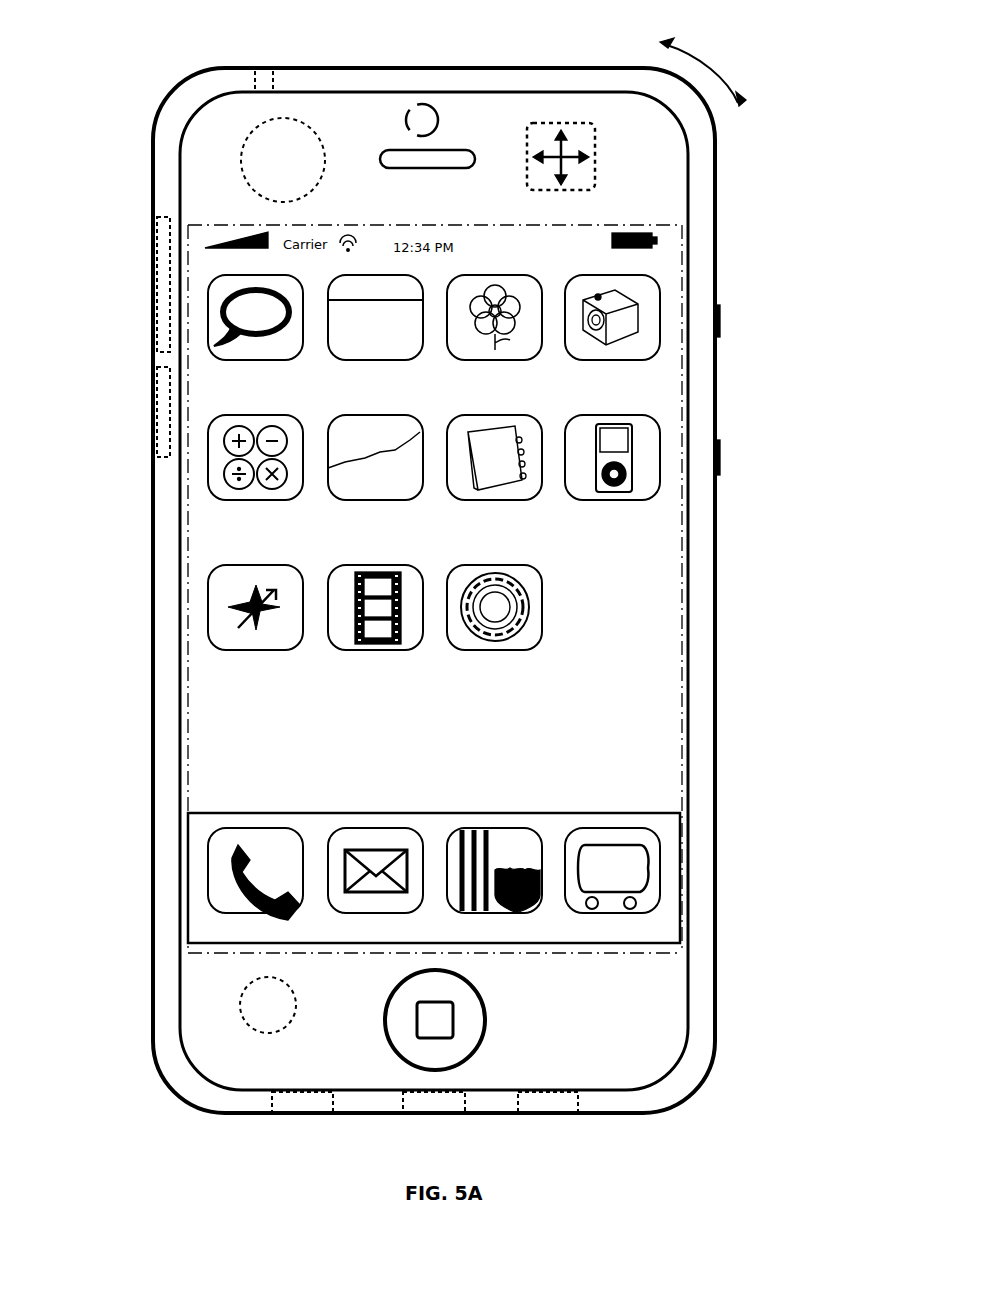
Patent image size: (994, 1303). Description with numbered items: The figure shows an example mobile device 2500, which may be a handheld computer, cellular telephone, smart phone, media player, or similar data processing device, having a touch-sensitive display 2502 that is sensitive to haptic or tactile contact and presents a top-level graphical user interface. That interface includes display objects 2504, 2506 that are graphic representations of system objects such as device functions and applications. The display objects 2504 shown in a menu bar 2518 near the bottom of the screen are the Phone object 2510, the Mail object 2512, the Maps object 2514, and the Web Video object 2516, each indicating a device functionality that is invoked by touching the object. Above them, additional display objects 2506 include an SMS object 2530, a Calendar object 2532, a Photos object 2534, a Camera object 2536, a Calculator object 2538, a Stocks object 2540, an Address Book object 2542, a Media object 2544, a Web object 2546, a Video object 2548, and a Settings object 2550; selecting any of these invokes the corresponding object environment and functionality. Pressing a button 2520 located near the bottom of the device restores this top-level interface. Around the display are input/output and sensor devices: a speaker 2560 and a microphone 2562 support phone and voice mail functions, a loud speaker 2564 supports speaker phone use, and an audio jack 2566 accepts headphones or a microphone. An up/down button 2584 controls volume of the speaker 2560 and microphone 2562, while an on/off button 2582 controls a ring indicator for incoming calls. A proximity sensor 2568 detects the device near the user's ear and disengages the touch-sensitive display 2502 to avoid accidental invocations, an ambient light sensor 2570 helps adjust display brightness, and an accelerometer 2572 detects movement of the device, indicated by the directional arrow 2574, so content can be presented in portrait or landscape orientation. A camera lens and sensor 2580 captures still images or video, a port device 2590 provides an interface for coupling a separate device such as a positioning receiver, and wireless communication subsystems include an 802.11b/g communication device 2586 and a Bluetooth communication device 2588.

The mobile device 2500 is at (510, 68).
The touch-sensitive display 2502 is at (620, 226).
The display objects 2504 is at (665, 828).
The display objects 2506 is at (662, 272).
The Phone object 2510 is at (258, 828).
The Mail object 2512 is at (378, 828).
The Maps object 2514 is at (510, 828).
The Web Video object 2516 is at (613, 828).
The menu bar 2518 is at (565, 953).
The button 2520 is at (487, 1020).
The SMS object 2530 is at (300, 360).
The Calendar object 2532 is at (420, 360).
The Photos object 2534 is at (528, 360).
The Camera object 2536 is at (658, 360).
The Calculator object 2538 is at (300, 500).
The Stocks object 2540 is at (420, 500).
The Address Book object 2542 is at (538, 500).
The Media object 2544 is at (658, 500).
The Web object 2546 is at (300, 652).
The Video object 2548 is at (420, 652).
The Settings object 2550 is at (541, 652).
The speaker 2560 is at (405, 168).
The microphone 2562 is at (333, 1110).
The loud speaker 2564 is at (578, 1110).
The audio jack 2566 is at (273, 80).
The proximity sensor 2568 is at (325, 170).
The ambient light sensor 2570 is at (288, 1030).
The accelerometer 2572 is at (597, 160).
The directional arrow 2574 is at (725, 75).
The camera lens and sensor 2580 is at (436, 110).
The on/off button 2582 is at (721, 322).
The up/down button 2584 is at (721, 457).
The 802.11b/g communication device 2586 is at (168, 219).
The Bluetooth communication device 2588 is at (168, 369).
The port device 2590 is at (465, 1110).